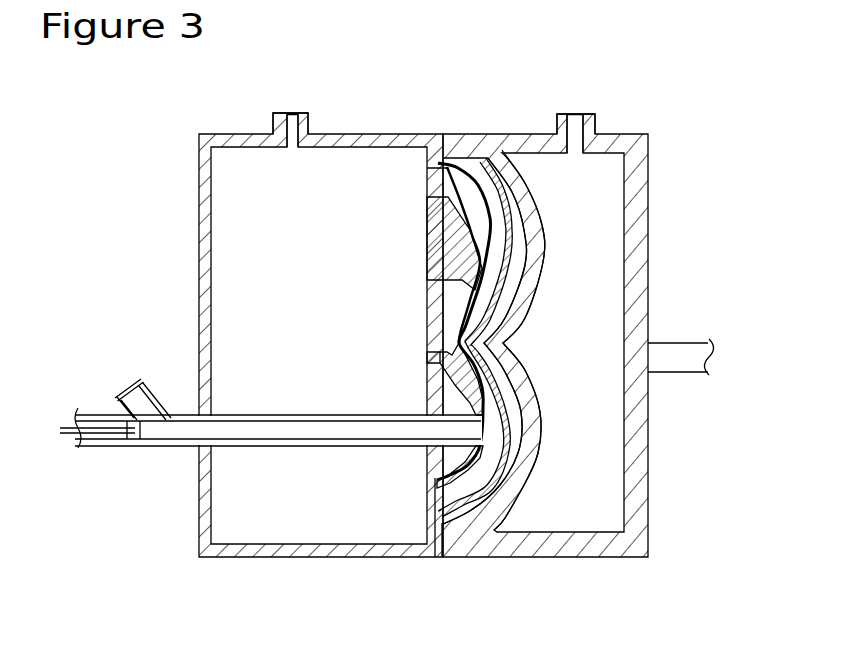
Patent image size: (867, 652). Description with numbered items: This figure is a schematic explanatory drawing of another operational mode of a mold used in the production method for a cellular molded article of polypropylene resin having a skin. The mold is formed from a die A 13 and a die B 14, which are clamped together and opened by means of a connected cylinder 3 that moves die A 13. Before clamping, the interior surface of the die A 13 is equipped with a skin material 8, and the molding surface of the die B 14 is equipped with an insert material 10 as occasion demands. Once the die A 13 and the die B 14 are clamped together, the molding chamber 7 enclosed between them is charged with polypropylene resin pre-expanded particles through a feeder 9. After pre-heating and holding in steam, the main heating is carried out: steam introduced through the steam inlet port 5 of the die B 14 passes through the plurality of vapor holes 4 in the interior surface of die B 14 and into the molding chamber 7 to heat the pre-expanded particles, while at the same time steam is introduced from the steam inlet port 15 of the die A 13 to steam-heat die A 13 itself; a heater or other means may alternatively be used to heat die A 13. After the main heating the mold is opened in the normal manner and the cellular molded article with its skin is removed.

The cylinder 3 is at (686, 365).
The vapor holes 4 is at (460, 195).
The vapor inlet port 5 is at (290, 118).
The molding chamber 7 is at (481, 470).
The skin material 8 is at (443, 557).
The feeder 9 is at (163, 450).
The insert material 10 is at (497, 160).
The die A 13 is at (645, 200).
The die B 14 is at (368, 140).
The steam inlet port 15 is at (577, 120).